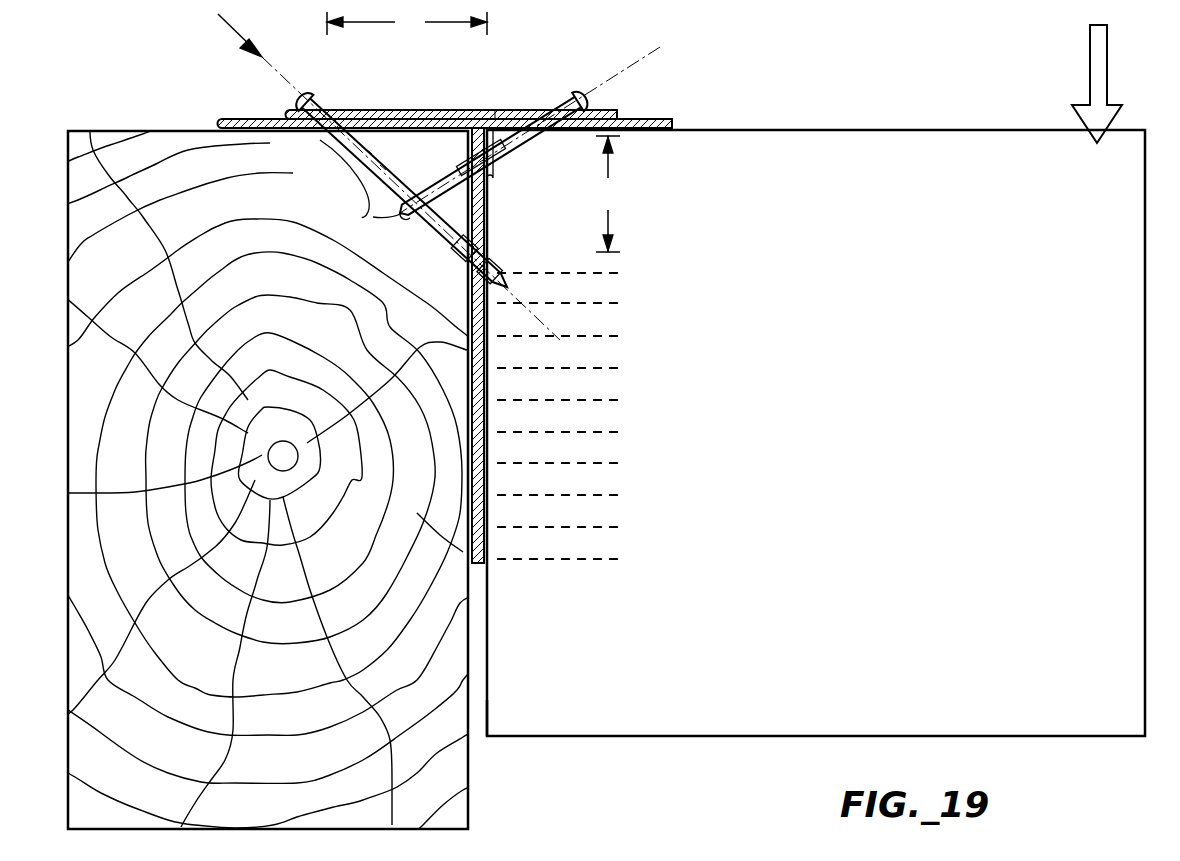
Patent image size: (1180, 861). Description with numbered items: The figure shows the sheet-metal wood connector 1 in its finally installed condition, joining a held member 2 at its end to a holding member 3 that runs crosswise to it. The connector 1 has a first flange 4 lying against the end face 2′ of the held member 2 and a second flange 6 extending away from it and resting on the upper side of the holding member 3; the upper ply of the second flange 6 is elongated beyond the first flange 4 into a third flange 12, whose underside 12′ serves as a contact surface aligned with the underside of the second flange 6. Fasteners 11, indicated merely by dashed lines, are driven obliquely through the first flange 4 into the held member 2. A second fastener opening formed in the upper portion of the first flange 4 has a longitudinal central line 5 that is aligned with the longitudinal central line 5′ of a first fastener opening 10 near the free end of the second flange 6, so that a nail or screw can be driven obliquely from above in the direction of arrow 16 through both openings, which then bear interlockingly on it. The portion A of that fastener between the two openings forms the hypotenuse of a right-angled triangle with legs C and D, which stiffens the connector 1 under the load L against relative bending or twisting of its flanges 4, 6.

The connector 1 is at (524, 100).
The held member 2 is at (818, 433).
The end face of held member 2′ is at (470, 720).
The holding member 3 is at (453, 793).
The first flange 4 is at (488, 545).
The longitudinal central line of second fastener opening 5 is at (520, 303).
The longitudinal central line of first fastener opening 5′ is at (308, 92).
The second flange 6 is at (383, 96).
The first fastener opening 10 is at (332, 107).
The fasteners 11 is at (627, 303).
The third flange 12 is at (614, 102).
The underside of third flange 12′ is at (657, 129).
The arrow 16 is at (226, 30).
The portion of fastener A is at (361, 190).
The leg of triangle C is at (407, 23).
The leg of triangle D is at (608, 194).
The load L is at (1088, 80).